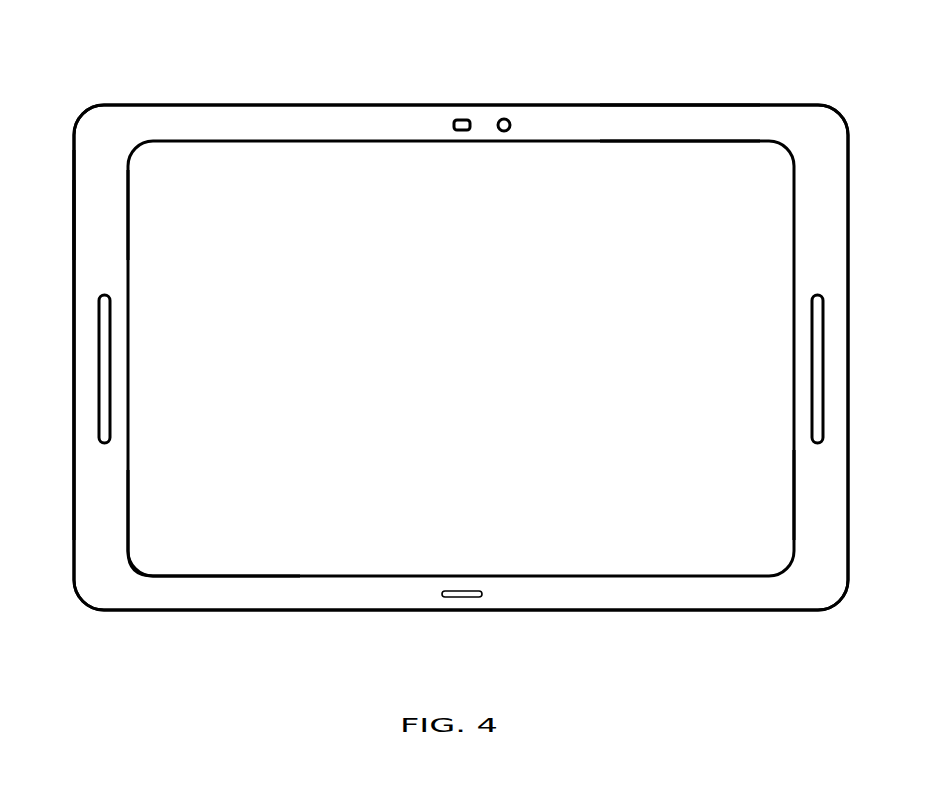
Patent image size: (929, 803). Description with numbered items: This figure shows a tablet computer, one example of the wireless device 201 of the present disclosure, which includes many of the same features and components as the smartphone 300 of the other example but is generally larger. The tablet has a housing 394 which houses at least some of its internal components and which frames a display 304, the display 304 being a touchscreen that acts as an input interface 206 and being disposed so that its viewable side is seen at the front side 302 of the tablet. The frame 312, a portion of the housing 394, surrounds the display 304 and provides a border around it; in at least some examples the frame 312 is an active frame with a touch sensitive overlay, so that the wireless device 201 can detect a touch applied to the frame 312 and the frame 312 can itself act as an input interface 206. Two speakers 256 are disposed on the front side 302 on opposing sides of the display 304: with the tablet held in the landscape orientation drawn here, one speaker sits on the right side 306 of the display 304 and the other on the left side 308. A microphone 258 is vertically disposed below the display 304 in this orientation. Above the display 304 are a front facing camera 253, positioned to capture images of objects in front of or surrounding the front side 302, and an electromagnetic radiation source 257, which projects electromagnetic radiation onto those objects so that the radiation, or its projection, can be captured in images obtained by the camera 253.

The wireless device 201 is at (134, 75).
The smartphone 300 is at (230, 75).
The display 304 is at (74, 220).
The frame 312 is at (90, 166).
The front side 302 is at (79, 508).
The right side 306 is at (794, 506).
The input interface 206 is at (328, 140).
The left side 308 is at (128, 543).
The housing 394 is at (673, 141).
The front facing camera 253 is at (453, 113).
The electromagnetic radiation source 257 is at (503, 113).
The speakers 256 is at (99, 375).
The microphone 258 is at (462, 600).